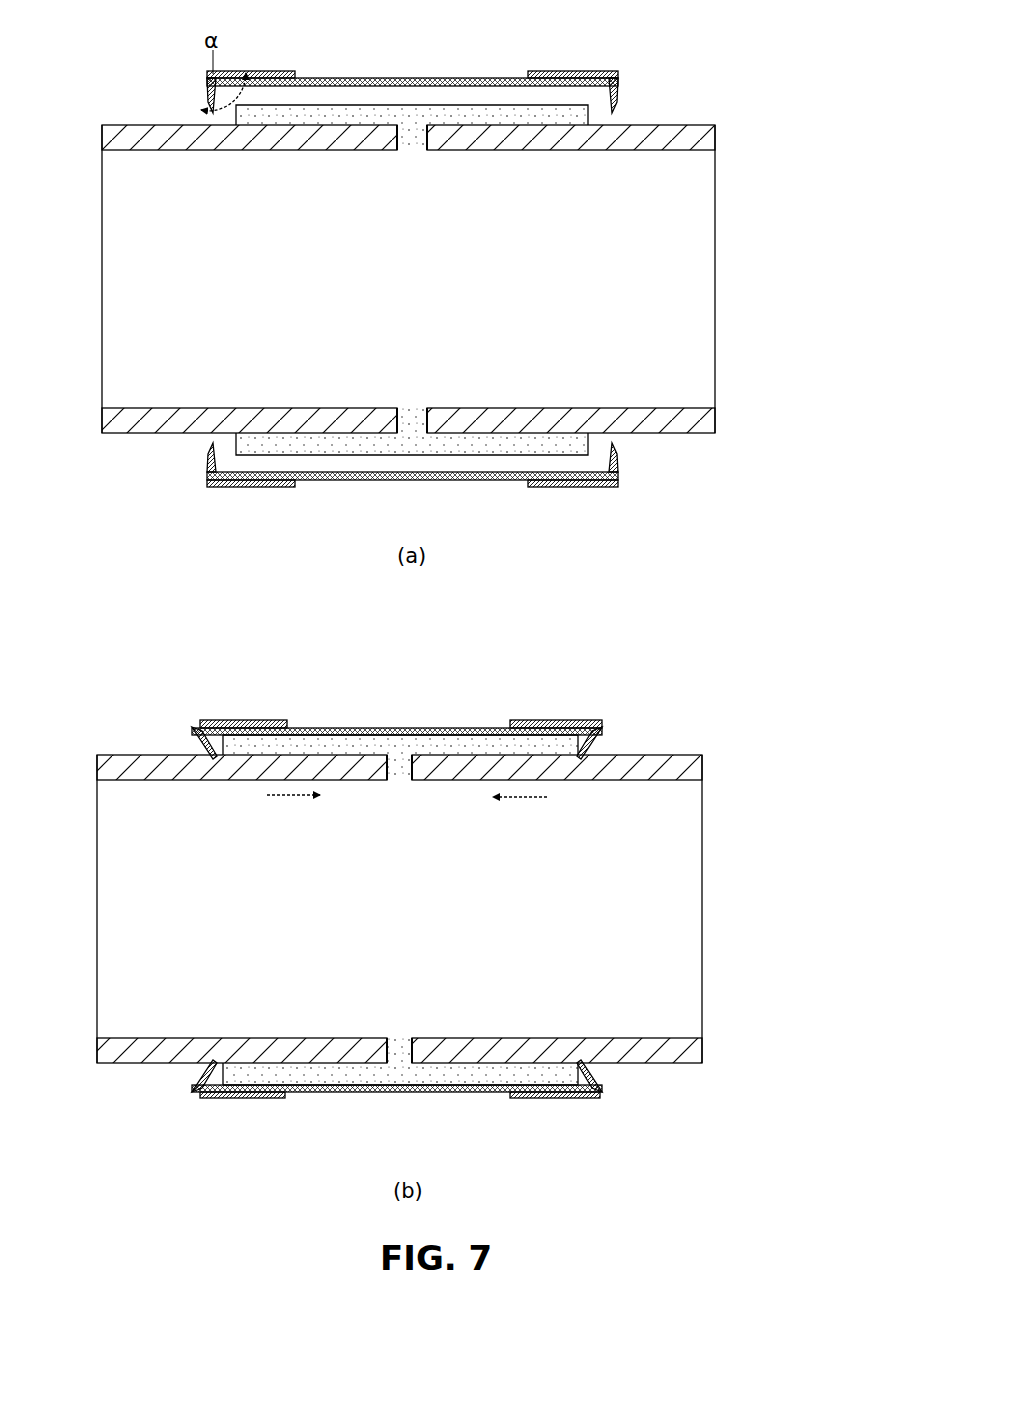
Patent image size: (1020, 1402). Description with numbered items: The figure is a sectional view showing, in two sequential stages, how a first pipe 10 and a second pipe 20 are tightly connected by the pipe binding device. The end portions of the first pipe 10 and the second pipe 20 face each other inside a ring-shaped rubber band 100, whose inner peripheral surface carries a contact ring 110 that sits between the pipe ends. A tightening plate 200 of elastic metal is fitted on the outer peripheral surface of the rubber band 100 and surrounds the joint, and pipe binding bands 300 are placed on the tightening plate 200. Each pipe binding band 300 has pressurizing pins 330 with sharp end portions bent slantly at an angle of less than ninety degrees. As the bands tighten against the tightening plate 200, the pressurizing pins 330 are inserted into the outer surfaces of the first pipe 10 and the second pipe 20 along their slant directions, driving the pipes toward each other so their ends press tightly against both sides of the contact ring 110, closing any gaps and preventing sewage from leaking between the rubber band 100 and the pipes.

The first pipe 10 is at (143, 130).
The second pipe 20 is at (716, 128).
The rubber band 100 is at (500, 124).
The contact ring 110 is at (410, 151).
The tightening plate 200 is at (403, 78).
The pipe binding band 300 is at (565, 71).
The pressurizing pin 330 is at (618, 89).